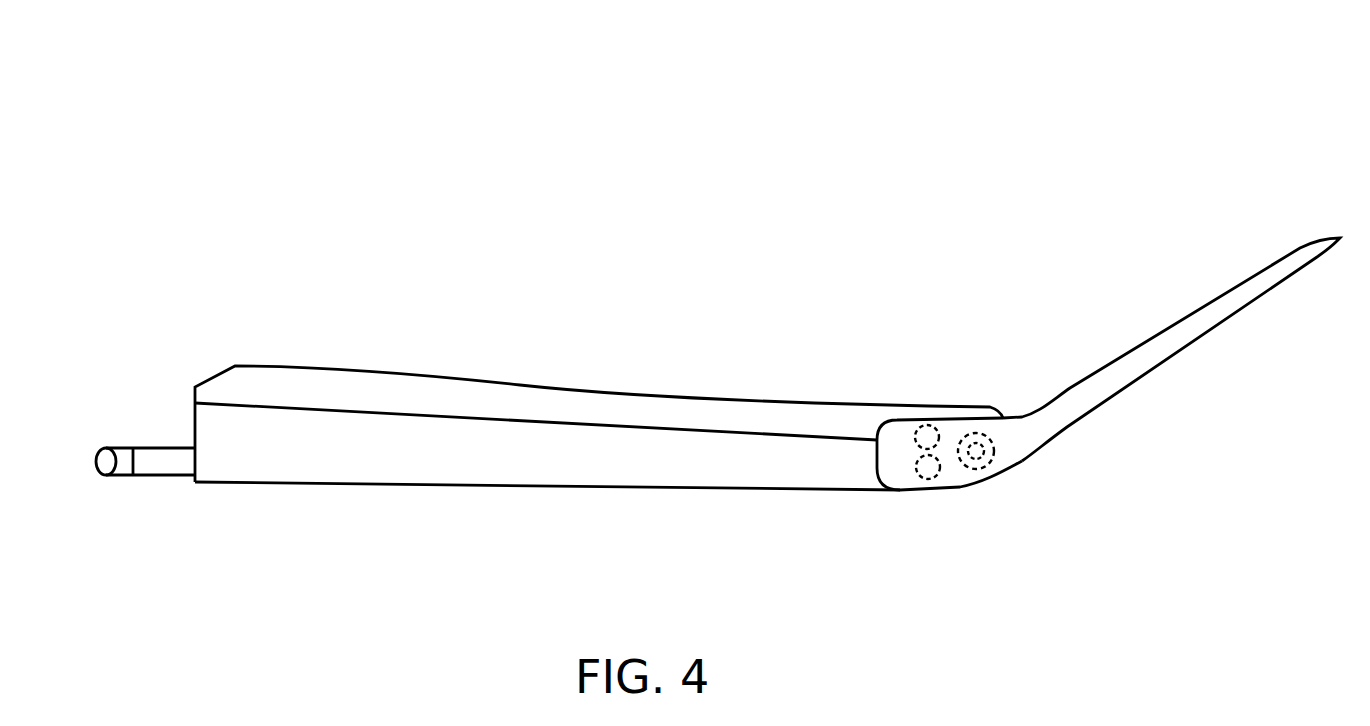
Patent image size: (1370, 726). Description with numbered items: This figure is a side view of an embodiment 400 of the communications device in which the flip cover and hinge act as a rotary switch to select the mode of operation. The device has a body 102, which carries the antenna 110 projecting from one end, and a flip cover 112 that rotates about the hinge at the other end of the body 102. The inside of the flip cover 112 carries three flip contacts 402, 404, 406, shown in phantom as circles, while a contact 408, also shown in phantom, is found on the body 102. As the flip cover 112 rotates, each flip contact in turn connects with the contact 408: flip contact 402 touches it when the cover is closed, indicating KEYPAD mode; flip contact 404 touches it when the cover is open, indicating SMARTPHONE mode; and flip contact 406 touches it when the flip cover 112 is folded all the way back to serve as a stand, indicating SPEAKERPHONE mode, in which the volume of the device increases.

The headset 400 is at (853, 102).
The body 102 is at (602, 490).
The antenna 110 is at (160, 478).
The flip cover 112 is at (1258, 232).
The flip contact 402 is at (917, 427).
The flip contact 404 is at (983, 425).
The flip contact 406 is at (922, 477).
The contact 408 is at (983, 458).